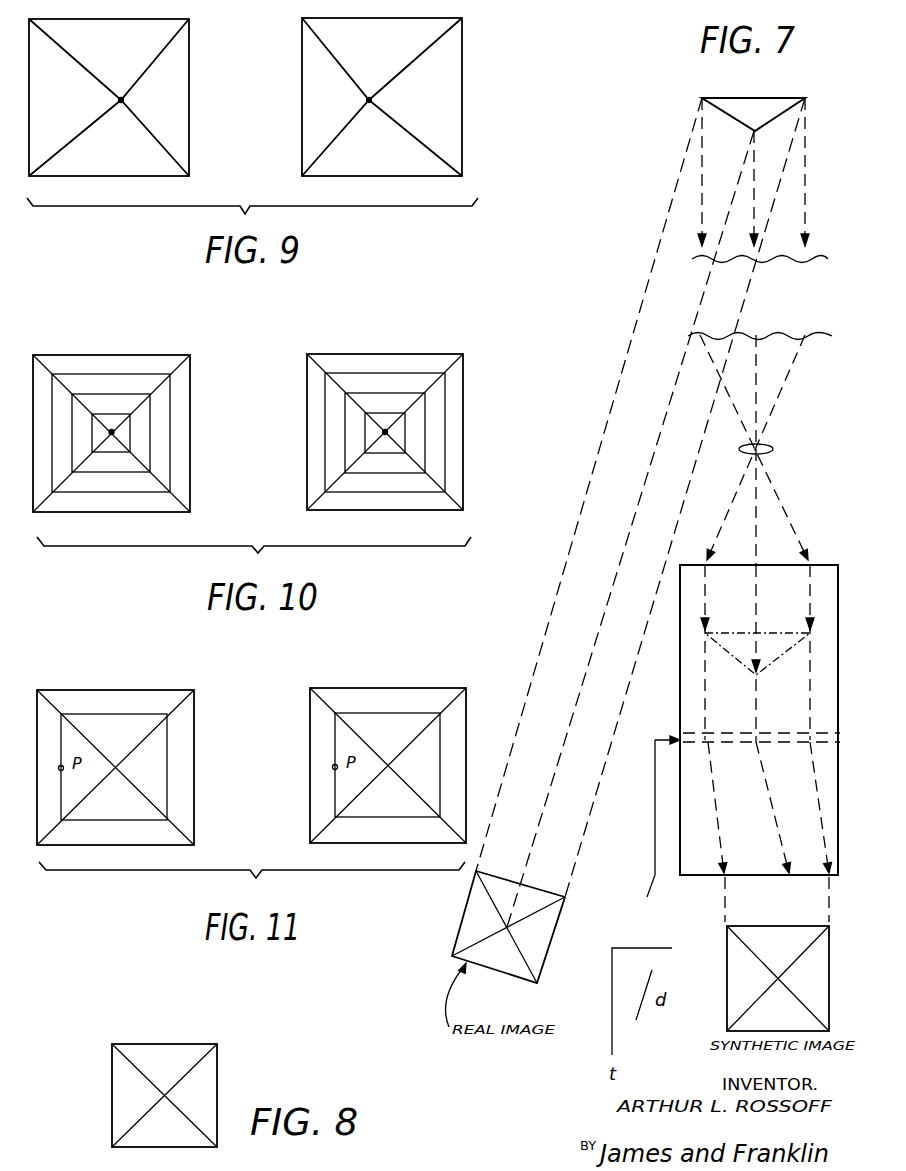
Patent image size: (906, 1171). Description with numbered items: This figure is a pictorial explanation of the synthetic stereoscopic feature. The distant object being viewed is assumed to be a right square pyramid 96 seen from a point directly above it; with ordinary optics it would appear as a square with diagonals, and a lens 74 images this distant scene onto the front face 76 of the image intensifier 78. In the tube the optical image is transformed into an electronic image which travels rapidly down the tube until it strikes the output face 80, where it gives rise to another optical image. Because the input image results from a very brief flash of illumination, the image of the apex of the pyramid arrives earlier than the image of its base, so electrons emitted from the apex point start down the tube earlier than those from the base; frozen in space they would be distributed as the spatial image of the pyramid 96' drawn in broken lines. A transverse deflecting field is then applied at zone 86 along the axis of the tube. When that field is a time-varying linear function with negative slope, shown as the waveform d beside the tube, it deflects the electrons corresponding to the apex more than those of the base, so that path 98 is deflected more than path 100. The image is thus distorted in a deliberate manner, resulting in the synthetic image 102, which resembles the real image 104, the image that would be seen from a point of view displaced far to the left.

In FIG. 8, the pyramid 96 is at (164, 1075).
In FIG. 7, the pyramid 96 is at (753, 101).
In FIG. 7, the lens 74 is at (768, 449).
In FIG. 7, the front face 76 is at (790, 565).
In FIG. 7, the image intensifier 78 is at (680, 697).
In FIG. 7, the zone 86 is at (655, 740).
In FIG. 7, the spatial image of the pyramid 96' is at (757, 637).
In FIG. 7, the path 98 is at (788, 847).
In FIG. 7, the path 100 is at (718, 816).
In FIG. 7, the output face 80 is at (808, 876).
In FIG. 7, the synthetic image 102 is at (830, 1001).
In FIG. 7, the real image 104 is at (519, 972).